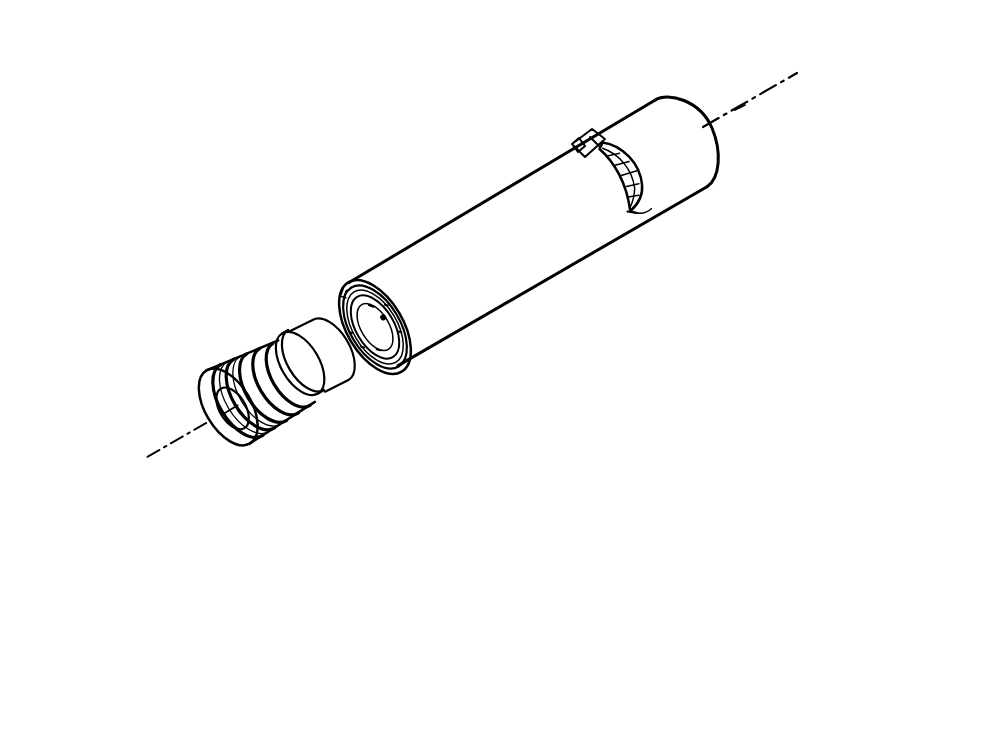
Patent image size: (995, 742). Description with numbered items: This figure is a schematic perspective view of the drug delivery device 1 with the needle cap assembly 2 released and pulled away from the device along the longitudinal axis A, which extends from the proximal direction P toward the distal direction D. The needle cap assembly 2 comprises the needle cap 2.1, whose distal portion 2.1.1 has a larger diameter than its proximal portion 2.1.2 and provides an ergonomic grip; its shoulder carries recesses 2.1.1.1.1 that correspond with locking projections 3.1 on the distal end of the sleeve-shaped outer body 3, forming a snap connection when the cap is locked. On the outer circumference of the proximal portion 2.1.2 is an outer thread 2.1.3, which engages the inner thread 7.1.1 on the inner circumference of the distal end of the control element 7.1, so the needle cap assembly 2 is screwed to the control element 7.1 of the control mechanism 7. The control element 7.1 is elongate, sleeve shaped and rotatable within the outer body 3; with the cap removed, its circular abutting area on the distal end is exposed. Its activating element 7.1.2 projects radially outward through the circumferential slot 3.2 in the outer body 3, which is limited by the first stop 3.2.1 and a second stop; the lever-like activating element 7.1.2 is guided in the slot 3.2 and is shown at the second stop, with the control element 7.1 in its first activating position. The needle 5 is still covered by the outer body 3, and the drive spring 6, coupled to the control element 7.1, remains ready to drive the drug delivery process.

The drug delivery device 1 is at (397, 173).
The needle cap assembly 2 is at (172, 349).
The needle cap 2.1 is at (273, 433).
The distal portion 2.1.1 is at (238, 354).
The recesses 2.1.1.1.1 is at (283, 330).
The proximal portion 2.1.2 is at (332, 367).
The outer thread 2.1.3 is at (308, 342).
The outer body 3 is at (474, 228).
The locking projections 3.1 is at (408, 348).
The slot 3.2 is at (647, 210).
The first stop 3.2.1 is at (626, 208).
The needle 5 is at (390, 320).
The drive spring 6 is at (603, 132).
The control mechanism 7 is at (566, 147).
The control element 7.1 is at (393, 362).
The inner thread 7.1.1 is at (350, 283).
The activating element 7.1.2 is at (590, 135).
The proximal direction P is at (760, 88).
The longitudinal axis A is at (741, 107).
The distal direction D is at (182, 444).